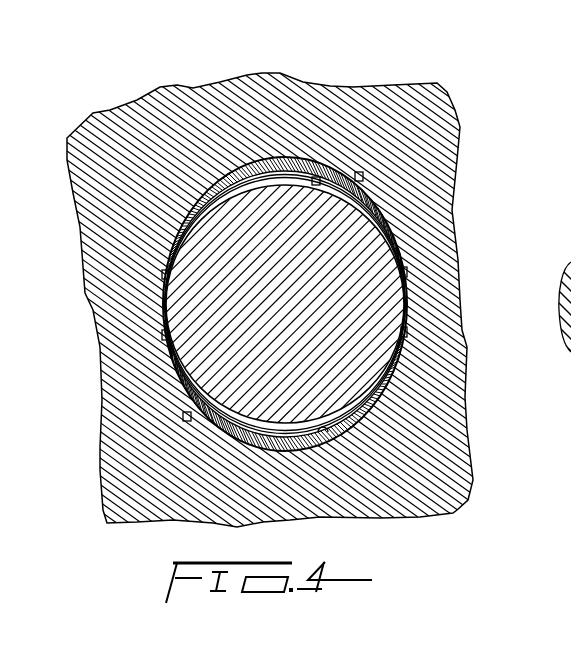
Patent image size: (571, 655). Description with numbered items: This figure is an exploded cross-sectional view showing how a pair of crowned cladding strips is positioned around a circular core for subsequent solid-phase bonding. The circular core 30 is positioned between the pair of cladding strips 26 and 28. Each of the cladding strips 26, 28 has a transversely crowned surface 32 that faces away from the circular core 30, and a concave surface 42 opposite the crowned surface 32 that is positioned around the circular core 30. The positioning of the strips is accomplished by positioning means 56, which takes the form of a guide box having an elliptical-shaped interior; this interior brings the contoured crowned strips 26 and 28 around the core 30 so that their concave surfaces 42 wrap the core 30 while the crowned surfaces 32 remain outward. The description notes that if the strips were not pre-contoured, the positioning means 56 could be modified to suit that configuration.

The cladding strip 26 is at (358, 177).
The cladding strip 28 is at (205, 412).
The circular core 30 is at (368, 252).
The crowned surface 32 is at (289, 157).
The concave surface 42 is at (316, 178).
The positioning means 56 is at (470, 422).